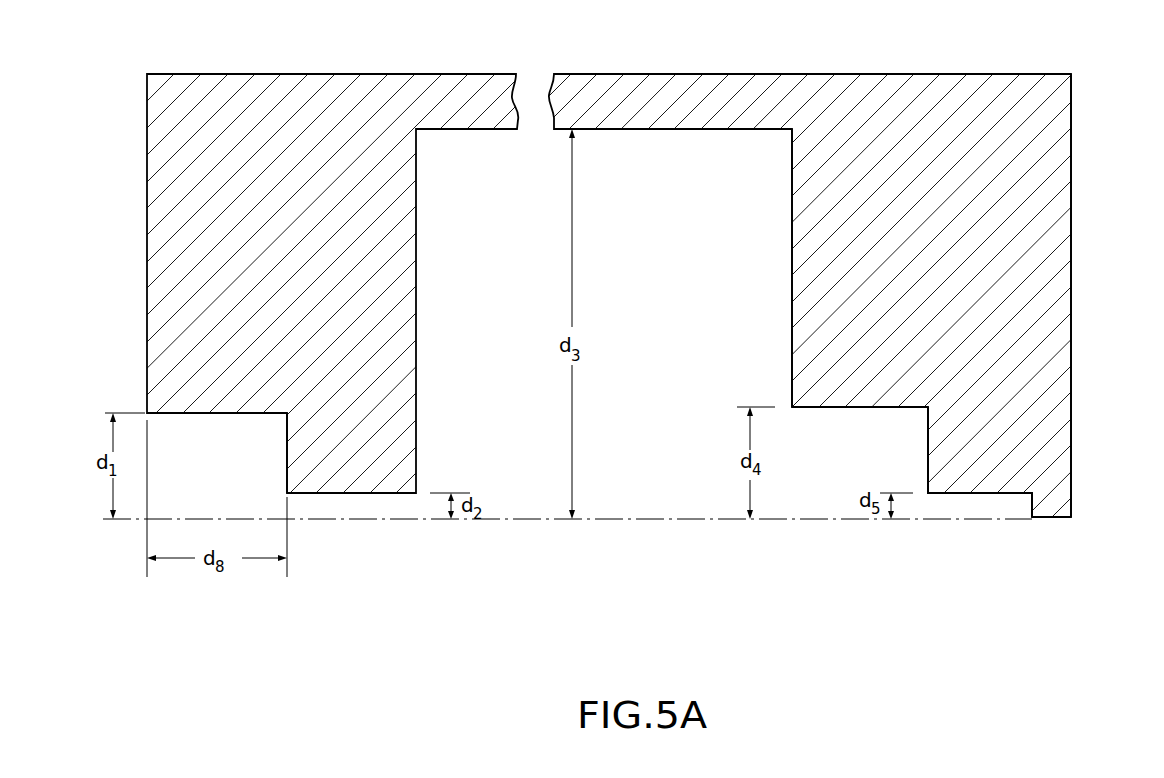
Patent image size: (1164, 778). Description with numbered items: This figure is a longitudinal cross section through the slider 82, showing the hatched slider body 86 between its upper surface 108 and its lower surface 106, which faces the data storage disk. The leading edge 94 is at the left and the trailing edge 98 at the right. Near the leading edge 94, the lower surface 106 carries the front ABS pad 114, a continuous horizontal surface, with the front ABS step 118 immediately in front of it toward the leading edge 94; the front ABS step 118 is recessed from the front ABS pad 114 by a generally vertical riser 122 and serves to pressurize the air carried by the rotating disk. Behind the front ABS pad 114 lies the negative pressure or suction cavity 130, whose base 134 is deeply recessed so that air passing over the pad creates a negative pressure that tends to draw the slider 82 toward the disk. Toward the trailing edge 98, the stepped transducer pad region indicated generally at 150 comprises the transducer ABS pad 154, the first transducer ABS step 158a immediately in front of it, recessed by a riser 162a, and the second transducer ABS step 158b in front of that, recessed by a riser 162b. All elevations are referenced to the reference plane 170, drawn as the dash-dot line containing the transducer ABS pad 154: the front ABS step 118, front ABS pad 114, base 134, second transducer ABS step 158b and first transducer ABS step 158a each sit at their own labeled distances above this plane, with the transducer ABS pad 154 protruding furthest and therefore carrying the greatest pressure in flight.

The slider 82 is at (1068, 74).
The slider body 86 is at (1028, 162).
The leading edge 94 is at (147, 220).
The trailing edge 98 is at (1071, 215).
The lower surface 106 is at (792, 260).
The upper surface 108 is at (650, 74).
The front ABS pad 114 is at (343, 493).
The front ABS step 118 is at (177, 413).
The riser 122 is at (287, 433).
The negative pressure cavity 130 is at (664, 272).
The base of the cavity 134 is at (468, 129).
The stepped portion 150 is at (888, 548).
The transducer ABS pad 154 is at (1047, 517).
The first transducer ABS step 158a is at (957, 493).
The second transducer ABS step 158b is at (843, 407).
The riser 162a is at (1032, 502).
The riser 162b is at (928, 442).
The reference plane 170 is at (520, 519).